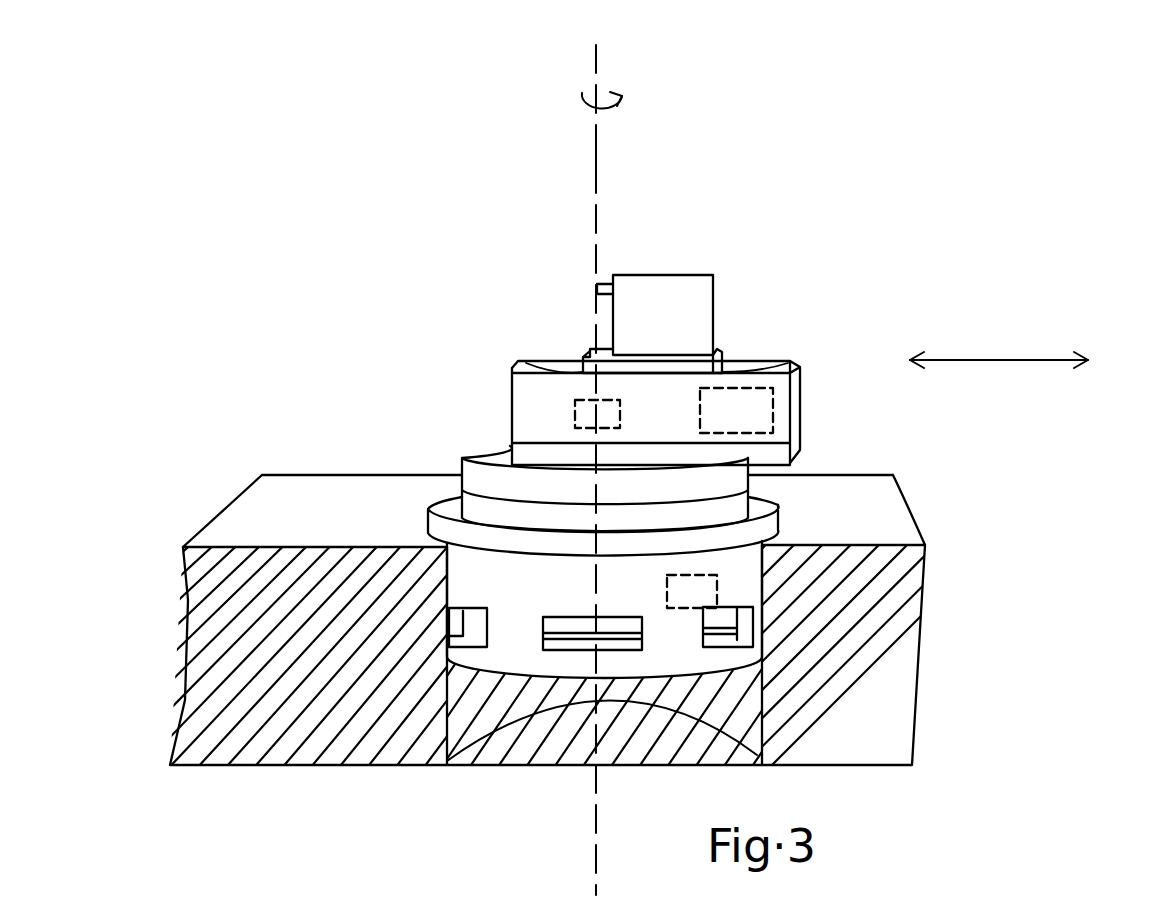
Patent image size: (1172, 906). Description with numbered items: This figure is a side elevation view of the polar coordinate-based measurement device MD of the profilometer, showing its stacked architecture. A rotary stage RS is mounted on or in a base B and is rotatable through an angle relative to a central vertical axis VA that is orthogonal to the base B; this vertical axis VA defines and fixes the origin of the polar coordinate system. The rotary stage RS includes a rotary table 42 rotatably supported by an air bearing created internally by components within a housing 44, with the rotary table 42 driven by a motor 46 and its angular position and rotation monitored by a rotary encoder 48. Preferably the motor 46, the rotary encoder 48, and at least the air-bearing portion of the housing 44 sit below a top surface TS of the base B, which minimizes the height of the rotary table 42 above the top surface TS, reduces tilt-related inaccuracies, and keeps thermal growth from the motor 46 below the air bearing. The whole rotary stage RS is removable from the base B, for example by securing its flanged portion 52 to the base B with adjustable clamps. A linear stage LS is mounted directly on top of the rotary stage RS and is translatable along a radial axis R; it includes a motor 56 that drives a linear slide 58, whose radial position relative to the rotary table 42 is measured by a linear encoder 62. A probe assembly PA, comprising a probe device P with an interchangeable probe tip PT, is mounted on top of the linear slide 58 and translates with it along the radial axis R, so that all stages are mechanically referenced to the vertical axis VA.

The rotary table 42 is at (460, 462).
The housing 44 is at (468, 502).
The motor 46 is at (585, 645).
The rotary encoder 48 is at (720, 582).
The flanged portion 52 is at (768, 525).
The motor 56 is at (773, 412).
The linear slide 58 is at (722, 352).
The linear encoder 62 is at (575, 412).
The probe device P is at (643, 275).
The probe tip PT is at (597, 285).
The probe assembly PA is at (693, 250).
The linear stage LS is at (513, 368).
The vertical axis VA is at (594, 150).
The measurement device MD is at (855, 252).
The radial axis R is at (1005, 360).
The top surface TS is at (227, 530).
The base B is at (230, 767).
The rotary stage RS is at (517, 647).